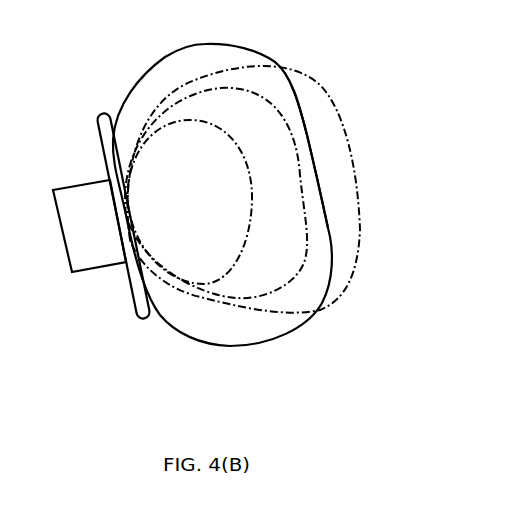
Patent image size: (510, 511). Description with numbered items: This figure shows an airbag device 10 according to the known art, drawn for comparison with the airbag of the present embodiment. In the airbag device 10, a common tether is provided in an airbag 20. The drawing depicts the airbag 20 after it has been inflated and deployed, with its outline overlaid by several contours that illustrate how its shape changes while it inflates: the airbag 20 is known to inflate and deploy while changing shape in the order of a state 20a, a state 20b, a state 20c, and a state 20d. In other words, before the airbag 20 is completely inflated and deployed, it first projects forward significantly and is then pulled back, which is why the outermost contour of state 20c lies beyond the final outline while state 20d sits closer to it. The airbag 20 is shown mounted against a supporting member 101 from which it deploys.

The airbag device 10 is at (328, 22).
The airbag 20 is at (183, 49).
The state 20a is at (253, 205).
The state 20b is at (302, 267).
The state 20c is at (356, 212).
The state 20d is at (314, 134).
The pin / shaft 101 is at (97, 138).